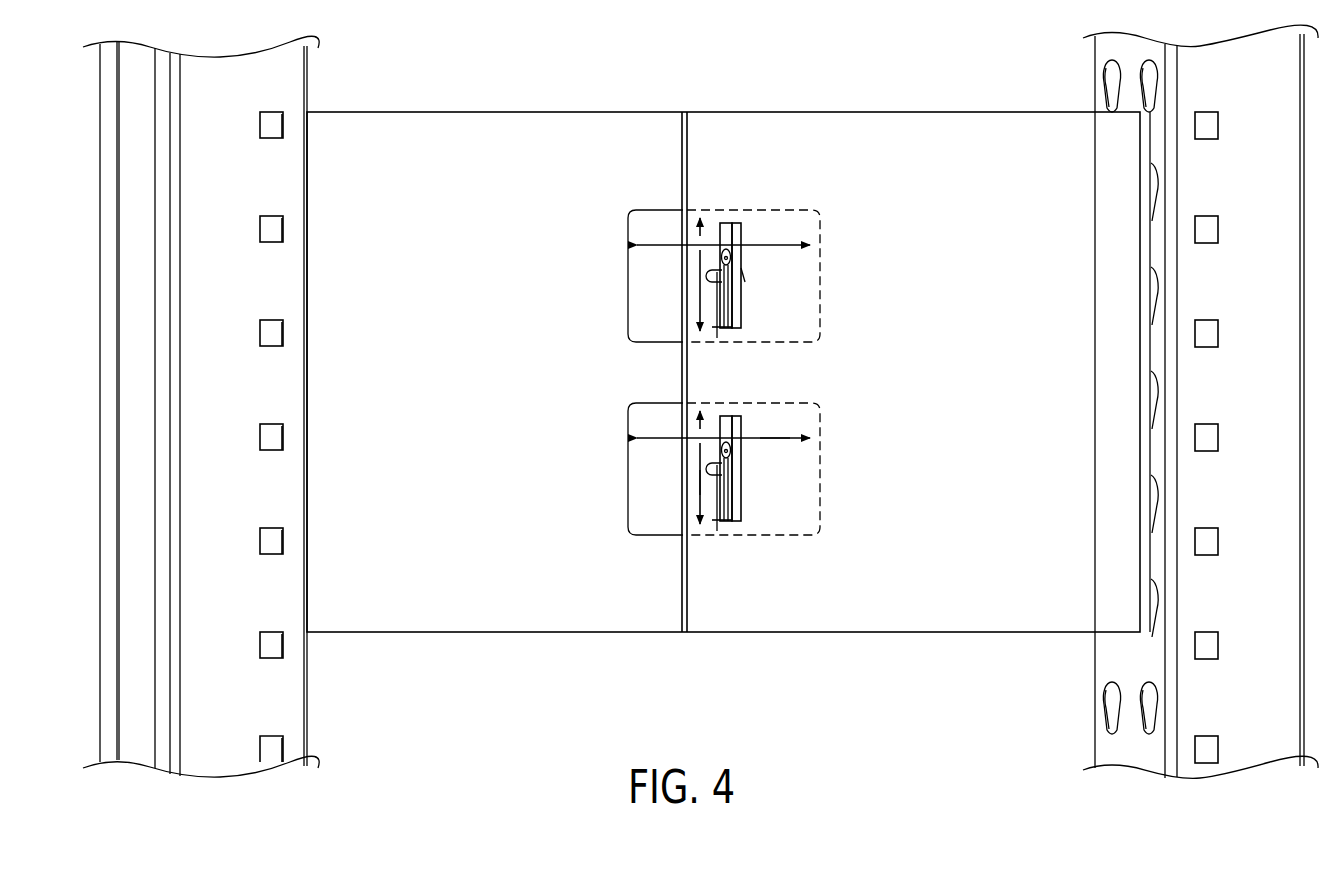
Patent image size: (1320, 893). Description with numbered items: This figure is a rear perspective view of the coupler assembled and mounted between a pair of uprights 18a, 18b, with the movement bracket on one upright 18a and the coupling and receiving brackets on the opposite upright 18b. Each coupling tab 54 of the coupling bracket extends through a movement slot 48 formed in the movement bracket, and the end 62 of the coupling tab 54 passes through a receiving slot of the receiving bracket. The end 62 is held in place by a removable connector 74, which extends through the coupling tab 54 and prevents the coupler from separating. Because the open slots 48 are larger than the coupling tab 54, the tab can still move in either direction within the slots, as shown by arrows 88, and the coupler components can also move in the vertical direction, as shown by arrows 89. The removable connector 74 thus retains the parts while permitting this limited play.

The upright 18a is at (307, 692).
The upright 18b is at (1108, 666).
The movement slot 48 is at (820, 277).
The coupling tab 54 is at (727, 232).
The end of coupling tab 62 is at (742, 236).
The removable connector 74 is at (745, 276).
The arrows 88 is at (776, 437).
The arrows 89 is at (700, 482).